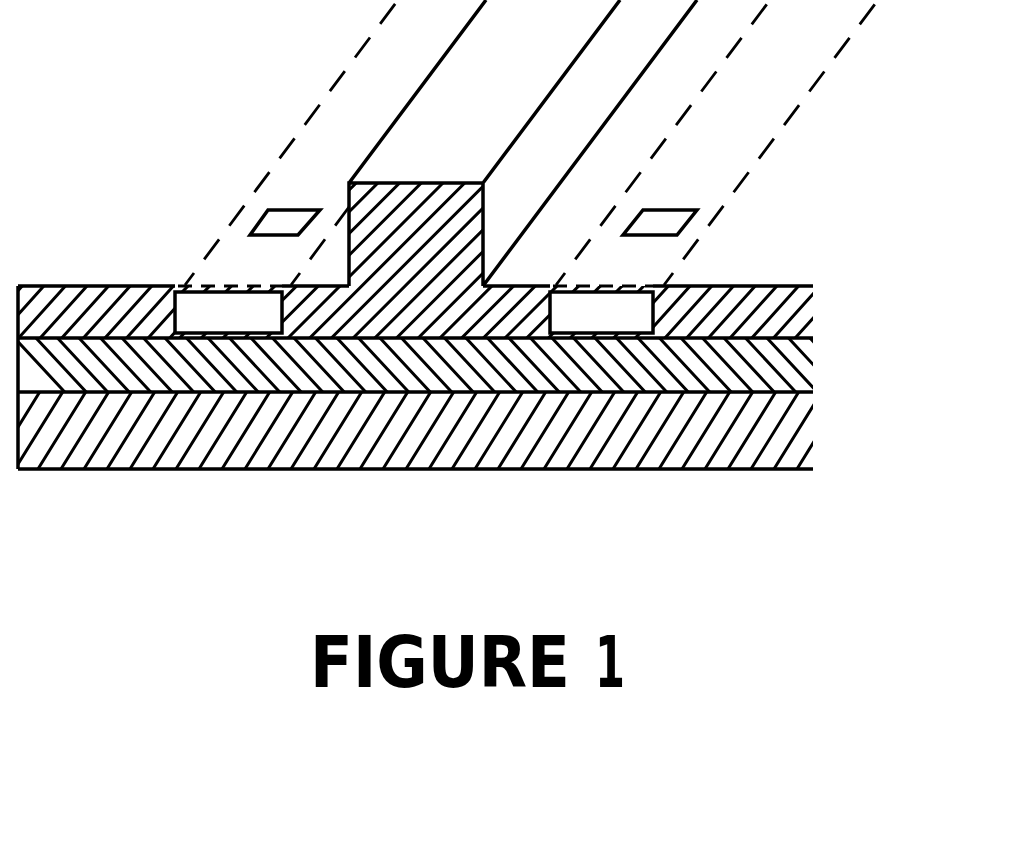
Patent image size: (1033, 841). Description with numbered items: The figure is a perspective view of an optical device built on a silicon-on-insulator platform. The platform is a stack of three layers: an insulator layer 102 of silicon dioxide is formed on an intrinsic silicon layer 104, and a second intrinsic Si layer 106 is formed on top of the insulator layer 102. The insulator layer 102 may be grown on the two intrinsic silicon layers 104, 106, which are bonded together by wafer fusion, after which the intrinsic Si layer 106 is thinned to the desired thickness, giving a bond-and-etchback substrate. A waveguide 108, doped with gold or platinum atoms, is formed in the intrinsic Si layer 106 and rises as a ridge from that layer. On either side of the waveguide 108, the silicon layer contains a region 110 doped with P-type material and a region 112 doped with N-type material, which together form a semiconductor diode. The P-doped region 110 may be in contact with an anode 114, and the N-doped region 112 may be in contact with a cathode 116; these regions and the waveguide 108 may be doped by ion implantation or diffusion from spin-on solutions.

The insulator layer 102 is at (810, 365).
The intrinsic silicon layer 104 is at (810, 433).
The second intrinsic Si layer 106 is at (810, 313).
The waveguide 108 is at (422, 191).
The region doped with P-type material 110 is at (286, 167).
The region doped with N-type material 112 is at (714, 167).
The anode 114 is at (268, 212).
The cathode 116 is at (697, 211).